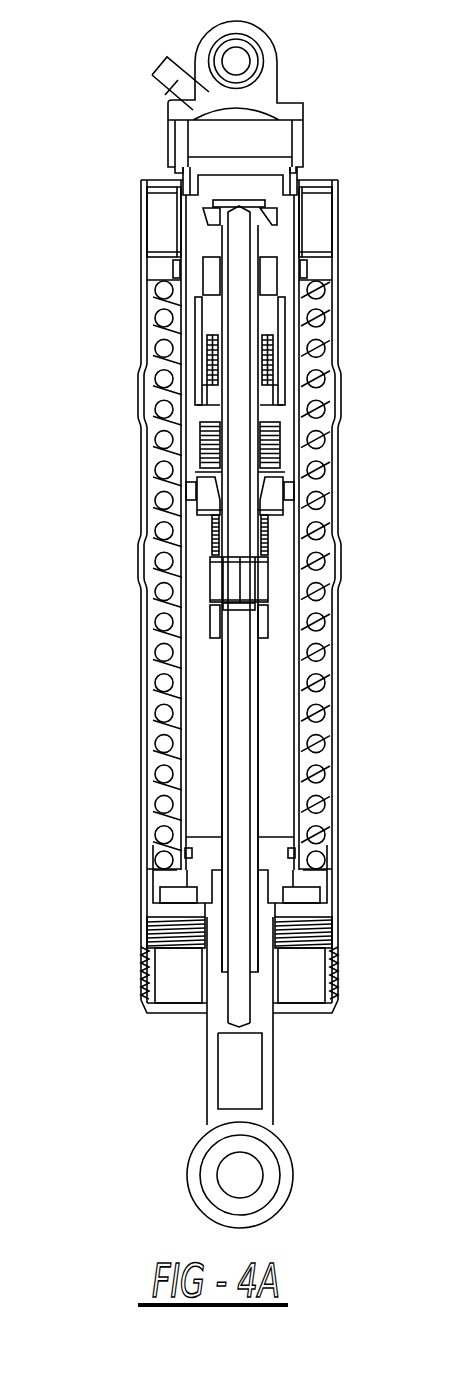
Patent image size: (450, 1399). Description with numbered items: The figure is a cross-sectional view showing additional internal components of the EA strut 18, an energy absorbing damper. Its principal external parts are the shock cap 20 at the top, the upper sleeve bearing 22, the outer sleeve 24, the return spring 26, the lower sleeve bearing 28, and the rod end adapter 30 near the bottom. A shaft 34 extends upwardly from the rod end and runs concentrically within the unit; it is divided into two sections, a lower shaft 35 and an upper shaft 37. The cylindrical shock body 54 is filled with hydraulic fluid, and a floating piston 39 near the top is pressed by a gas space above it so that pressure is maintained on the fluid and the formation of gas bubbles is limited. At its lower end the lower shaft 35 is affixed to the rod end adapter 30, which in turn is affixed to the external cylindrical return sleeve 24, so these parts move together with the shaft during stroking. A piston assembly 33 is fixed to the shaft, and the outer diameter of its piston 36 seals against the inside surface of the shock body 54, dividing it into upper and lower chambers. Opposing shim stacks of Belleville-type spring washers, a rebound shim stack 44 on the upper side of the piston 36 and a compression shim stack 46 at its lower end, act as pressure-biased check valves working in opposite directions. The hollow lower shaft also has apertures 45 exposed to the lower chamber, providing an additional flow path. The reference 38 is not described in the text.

The EA strut 18 is at (355, 223).
The shock cap 20 is at (167, 123).
The upper sleeve bearing 22 is at (157, 270).
The outer sleeve 24 is at (147, 315).
The return spring 26 is at (153, 372).
The lower sleeve bearing 28 is at (163, 877).
The rod end adapter 30 is at (158, 978).
The piston assembly 33 is at (282, 480).
The shaft 34 is at (220, 697).
The lower shaft 35 is at (258, 718).
The piston 36 is at (195, 493).
The upper shaft 37 is at (282, 312).
The outer tube 38 is at (338, 778).
The floating piston 39 is at (183, 162).
The rebound shim stack 44 is at (215, 448).
The apertures 45 is at (260, 582).
The compression shim stack 46 is at (215, 532).
The shock body 54 is at (180, 227).